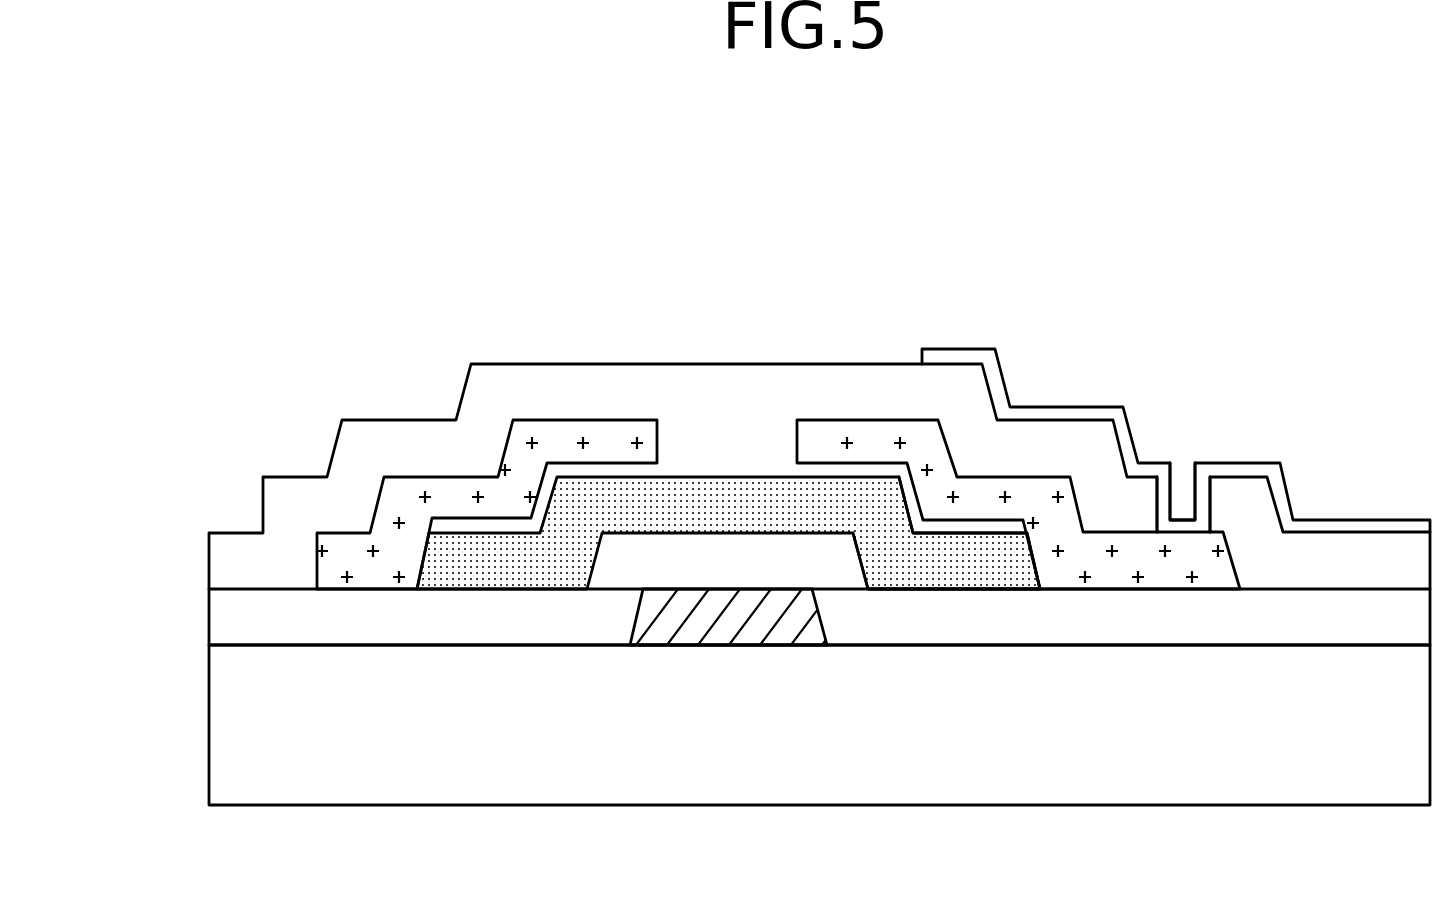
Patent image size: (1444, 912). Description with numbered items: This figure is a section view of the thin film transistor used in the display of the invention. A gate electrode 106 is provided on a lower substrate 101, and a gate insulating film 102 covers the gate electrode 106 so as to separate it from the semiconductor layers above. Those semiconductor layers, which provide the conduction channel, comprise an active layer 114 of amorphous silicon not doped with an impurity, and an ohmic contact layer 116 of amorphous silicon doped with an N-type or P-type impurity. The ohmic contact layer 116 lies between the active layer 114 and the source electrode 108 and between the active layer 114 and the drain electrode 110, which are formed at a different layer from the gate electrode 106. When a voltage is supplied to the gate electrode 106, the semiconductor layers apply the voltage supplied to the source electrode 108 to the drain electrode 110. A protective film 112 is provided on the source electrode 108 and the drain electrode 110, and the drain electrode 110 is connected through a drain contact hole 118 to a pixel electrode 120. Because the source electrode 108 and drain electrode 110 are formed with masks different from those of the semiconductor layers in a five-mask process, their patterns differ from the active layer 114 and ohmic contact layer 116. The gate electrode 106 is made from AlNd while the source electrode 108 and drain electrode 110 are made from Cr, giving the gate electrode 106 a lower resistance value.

The lower substrate 101 is at (408, 792).
The gate insulating film 102 is at (222, 620).
The gate electrode 106 is at (733, 635).
The source electrode 108 is at (570, 443).
The drain electrode 110 is at (860, 445).
The protective film 112 is at (283, 512).
The active layer 114 is at (477, 570).
The ohmic contact layer 116 is at (967, 527).
The drain contact hole 118 is at (1185, 472).
The pixel electrode 120 is at (1362, 517).